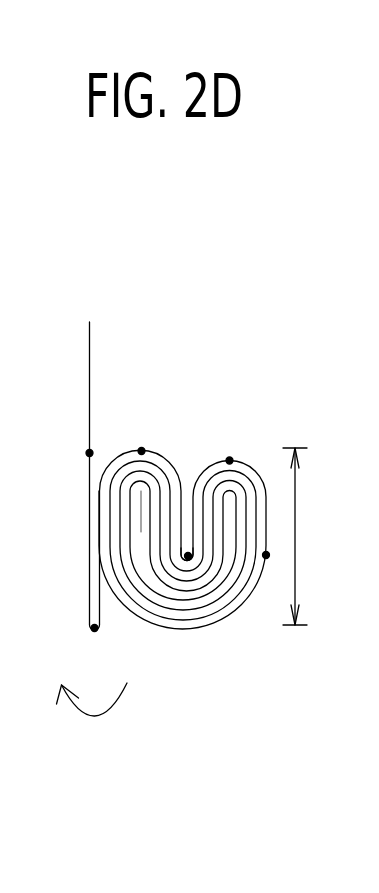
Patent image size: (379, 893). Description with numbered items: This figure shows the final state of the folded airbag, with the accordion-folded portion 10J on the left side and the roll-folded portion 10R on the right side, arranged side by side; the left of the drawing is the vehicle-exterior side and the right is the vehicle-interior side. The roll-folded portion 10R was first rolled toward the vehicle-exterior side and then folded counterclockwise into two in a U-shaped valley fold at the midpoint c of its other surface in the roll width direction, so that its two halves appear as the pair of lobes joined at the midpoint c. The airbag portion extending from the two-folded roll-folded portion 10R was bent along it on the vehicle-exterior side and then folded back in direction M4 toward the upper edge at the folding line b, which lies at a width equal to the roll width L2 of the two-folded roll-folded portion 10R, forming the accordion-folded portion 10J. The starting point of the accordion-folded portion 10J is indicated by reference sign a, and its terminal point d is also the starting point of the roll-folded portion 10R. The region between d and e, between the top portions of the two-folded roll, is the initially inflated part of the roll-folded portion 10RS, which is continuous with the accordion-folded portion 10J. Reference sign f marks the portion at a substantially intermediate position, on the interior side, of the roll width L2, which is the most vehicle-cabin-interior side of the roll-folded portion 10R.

The accordion-folded portion 10J is at (88, 581).
The roll-folded portion 10R is at (221, 620).
The initially inflated part of the roll-folded portion 10RS is at (193, 411).
The starting point of the accordion-folded portion a is at (87, 451).
The folding line b is at (93, 649).
The midpoint c is at (188, 550).
The terminal point of the accordion-folded portion d is at (145, 432).
The top portion of the two-folded roll-folded portion e is at (229, 437).
The most vehicle-cabin-interior side portion of the roll-folded portion f is at (275, 543).
The roll width of the two-folded roll-folded portion L2 is at (314, 536).
The folding-back direction M4 is at (92, 723).